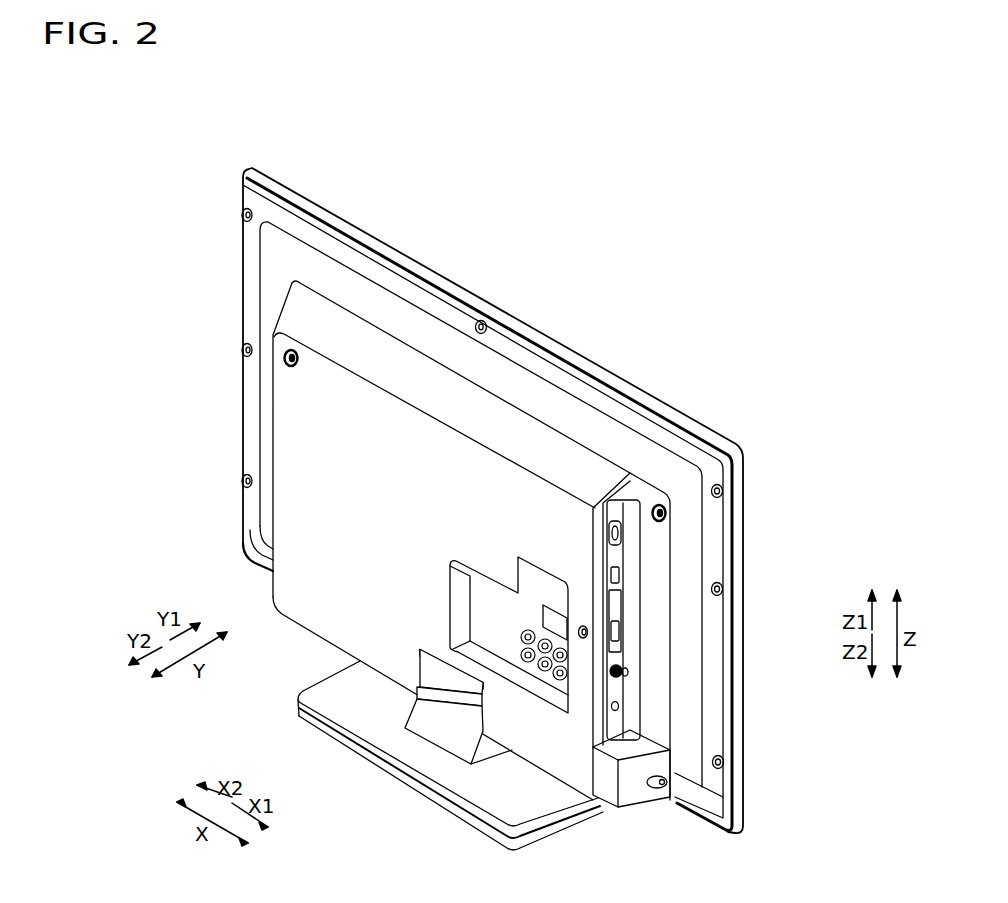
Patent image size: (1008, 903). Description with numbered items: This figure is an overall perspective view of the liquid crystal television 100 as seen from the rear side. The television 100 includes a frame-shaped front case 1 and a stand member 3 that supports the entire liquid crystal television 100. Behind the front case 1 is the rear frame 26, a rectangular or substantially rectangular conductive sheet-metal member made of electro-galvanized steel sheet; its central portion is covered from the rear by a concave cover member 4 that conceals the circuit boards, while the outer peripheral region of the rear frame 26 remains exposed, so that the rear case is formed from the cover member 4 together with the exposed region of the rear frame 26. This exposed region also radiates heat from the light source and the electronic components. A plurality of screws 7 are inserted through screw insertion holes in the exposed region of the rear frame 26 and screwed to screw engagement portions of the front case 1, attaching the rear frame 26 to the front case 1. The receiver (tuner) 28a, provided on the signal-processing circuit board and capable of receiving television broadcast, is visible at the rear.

The liquid crystal television 100 is at (737, 379).
The front case 1 is at (740, 456).
The stand member 3 is at (448, 766).
The cover member 4 is at (297, 457).
The screws 7 is at (243, 214).
The rear frame 26 is at (272, 292).
The receiver (tuner) 28a is at (625, 674).